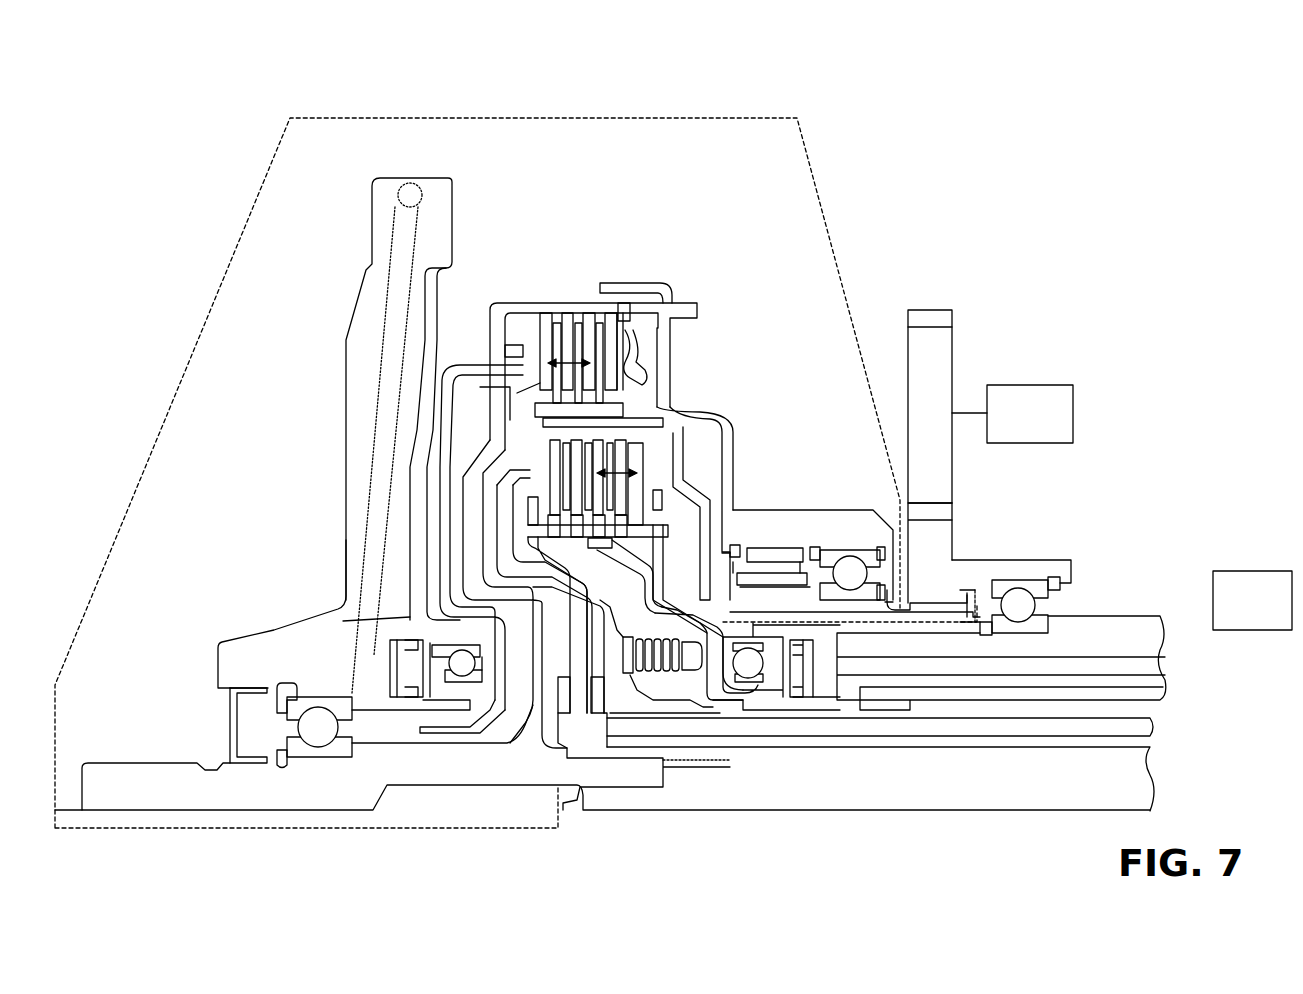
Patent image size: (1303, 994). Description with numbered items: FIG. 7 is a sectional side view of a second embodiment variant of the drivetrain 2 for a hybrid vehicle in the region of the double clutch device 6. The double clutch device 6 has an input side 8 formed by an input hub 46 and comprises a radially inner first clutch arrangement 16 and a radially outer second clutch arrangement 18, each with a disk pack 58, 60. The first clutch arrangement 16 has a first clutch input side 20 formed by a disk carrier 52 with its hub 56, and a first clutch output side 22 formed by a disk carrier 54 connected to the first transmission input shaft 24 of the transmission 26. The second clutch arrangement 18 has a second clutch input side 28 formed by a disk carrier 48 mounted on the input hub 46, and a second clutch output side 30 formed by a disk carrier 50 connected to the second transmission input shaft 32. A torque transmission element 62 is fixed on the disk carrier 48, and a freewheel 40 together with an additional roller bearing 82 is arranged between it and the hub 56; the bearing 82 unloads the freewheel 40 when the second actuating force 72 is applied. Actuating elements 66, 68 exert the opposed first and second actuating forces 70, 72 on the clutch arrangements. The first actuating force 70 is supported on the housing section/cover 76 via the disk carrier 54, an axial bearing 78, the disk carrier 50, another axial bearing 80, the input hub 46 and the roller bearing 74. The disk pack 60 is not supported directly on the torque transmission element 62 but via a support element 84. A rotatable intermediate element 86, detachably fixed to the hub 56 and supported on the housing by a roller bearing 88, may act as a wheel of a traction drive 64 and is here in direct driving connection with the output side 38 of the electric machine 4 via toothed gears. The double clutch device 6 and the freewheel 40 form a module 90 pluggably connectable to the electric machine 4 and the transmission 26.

The drivetrain 2 is at (70, 244).
The electric machine 4 is at (1036, 422).
The double clutch device 6 is at (586, 295).
The input side 8 is at (616, 813).
The first clutch arrangement 16 is at (691, 440).
The second clutch arrangement 18 is at (628, 303).
The first clutch input side 20 is at (845, 524).
The first clutch output side 22 is at (420, 656).
The first transmission input shaft 24 is at (1152, 733).
The transmission 26 is at (1265, 616).
The second clutch input side 28 is at (568, 491).
The second clutch output side 30 is at (465, 565).
The second transmission input shaft 32 is at (925, 800).
The output side 38 is at (963, 410).
The freewheel 40 is at (811, 538).
The input hub 46 is at (323, 790).
The disk carrier 48 is at (533, 305).
The disk carrier 50 is at (495, 508).
The disk carrier 52 is at (710, 503).
The disk carrier 54 is at (610, 615).
The hub 56 is at (792, 617).
The disk pack 58 is at (656, 446).
The disk pack 60 is at (600, 333).
The torque transmission element 62 is at (735, 427).
The traction drive 64 is at (1031, 460).
The actuating element 66 is at (718, 547).
The actuating element 68 is at (440, 408).
The first actuating force 70 is at (697, 476).
The second actuating force 72 is at (553, 345).
The bearing 74 is at (265, 731).
The housing section/cover 76 is at (357, 540).
The axial bearing 78 is at (618, 713).
The axial bearing 80 is at (560, 700).
The bearing 82 is at (883, 575).
The support element 84 is at (627, 446).
The intermediate element 86 is at (972, 568).
The bearing 88 is at (1073, 610).
The module 90 is at (175, 392).